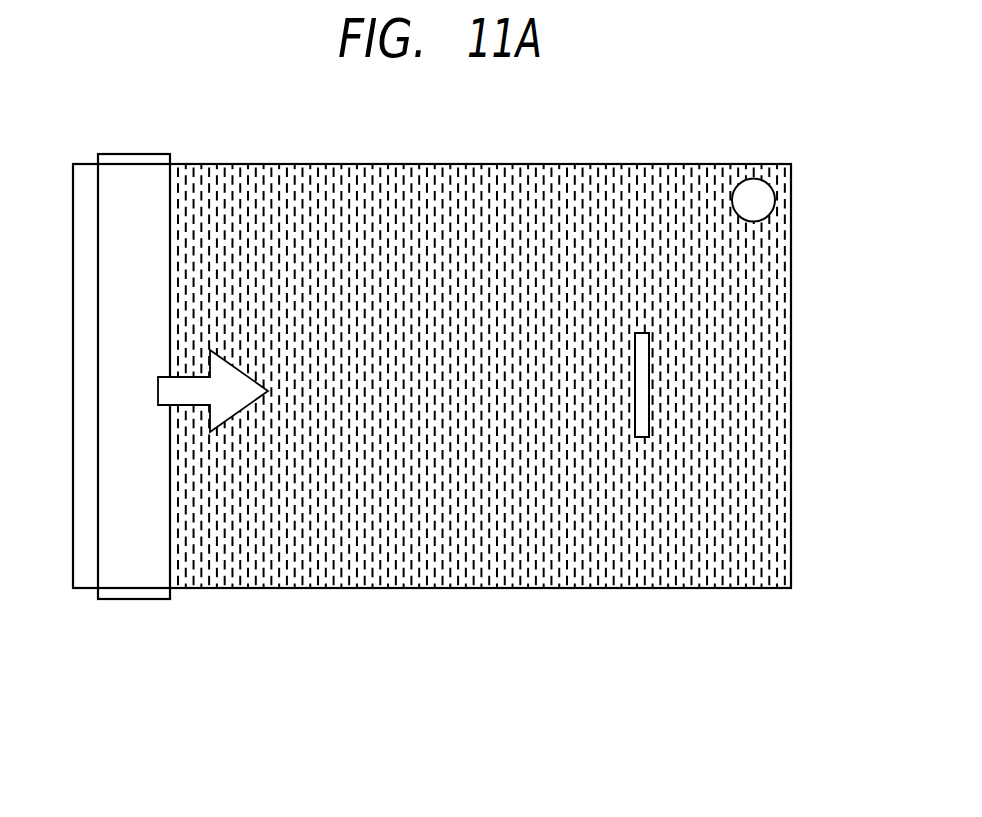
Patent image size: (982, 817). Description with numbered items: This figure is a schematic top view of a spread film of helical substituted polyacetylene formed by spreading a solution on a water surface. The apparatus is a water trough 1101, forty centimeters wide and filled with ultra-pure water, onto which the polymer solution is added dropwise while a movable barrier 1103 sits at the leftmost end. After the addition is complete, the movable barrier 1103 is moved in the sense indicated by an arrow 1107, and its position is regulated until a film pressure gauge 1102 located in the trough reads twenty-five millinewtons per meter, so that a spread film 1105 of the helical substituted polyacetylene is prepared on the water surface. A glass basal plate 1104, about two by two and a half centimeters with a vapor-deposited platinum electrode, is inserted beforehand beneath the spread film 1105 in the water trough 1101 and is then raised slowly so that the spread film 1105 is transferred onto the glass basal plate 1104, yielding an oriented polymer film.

The water trough 1101 is at (483, 177).
The film pressure gauge 1102 is at (755, 195).
The movable barrier 1103 is at (135, 575).
The glass basal plate 1104 is at (643, 415).
The spread film 1105 is at (380, 513).
The arrow 1107 is at (245, 398).